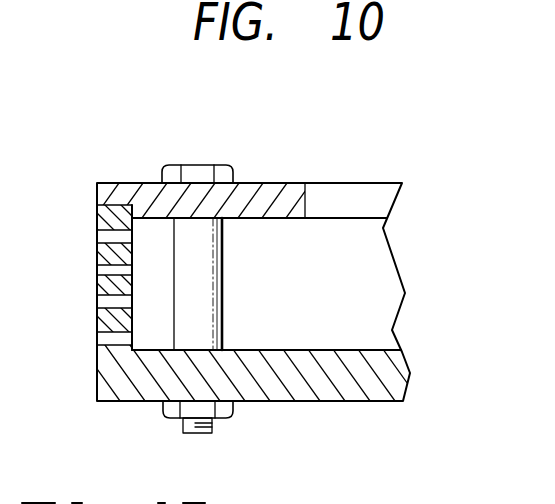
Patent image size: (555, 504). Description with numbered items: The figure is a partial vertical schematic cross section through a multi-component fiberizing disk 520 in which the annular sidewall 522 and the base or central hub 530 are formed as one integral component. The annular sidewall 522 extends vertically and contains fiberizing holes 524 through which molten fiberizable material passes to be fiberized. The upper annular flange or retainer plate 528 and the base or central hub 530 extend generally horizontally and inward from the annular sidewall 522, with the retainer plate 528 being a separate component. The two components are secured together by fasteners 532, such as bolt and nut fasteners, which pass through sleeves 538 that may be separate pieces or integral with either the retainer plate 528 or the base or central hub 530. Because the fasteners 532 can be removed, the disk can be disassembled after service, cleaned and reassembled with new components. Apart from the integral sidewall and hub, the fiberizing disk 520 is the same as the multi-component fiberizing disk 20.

The multi-component fiberizing disk 20 is at (10, 77).
The multi-component fiberizing disk 520 is at (352, 132).
The annular sidewall 522 is at (98, 322).
The fiberizing holes 524 is at (98, 270).
The upper annular flange or retainer plate 528 is at (276, 183).
The base or central hub 530 is at (305, 387).
The fasteners 532 is at (203, 166).
The sleeves 538 is at (203, 288).